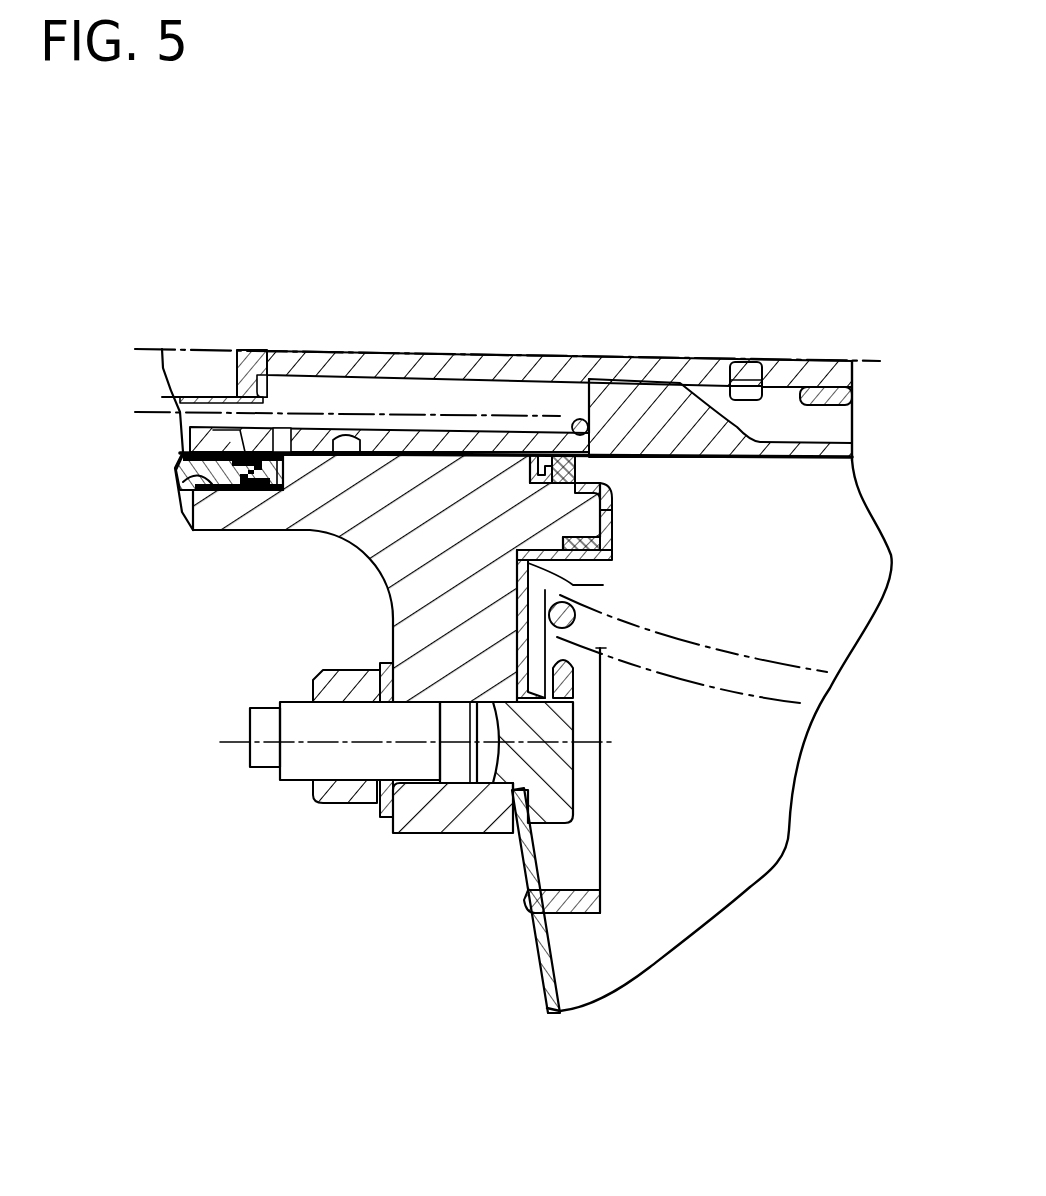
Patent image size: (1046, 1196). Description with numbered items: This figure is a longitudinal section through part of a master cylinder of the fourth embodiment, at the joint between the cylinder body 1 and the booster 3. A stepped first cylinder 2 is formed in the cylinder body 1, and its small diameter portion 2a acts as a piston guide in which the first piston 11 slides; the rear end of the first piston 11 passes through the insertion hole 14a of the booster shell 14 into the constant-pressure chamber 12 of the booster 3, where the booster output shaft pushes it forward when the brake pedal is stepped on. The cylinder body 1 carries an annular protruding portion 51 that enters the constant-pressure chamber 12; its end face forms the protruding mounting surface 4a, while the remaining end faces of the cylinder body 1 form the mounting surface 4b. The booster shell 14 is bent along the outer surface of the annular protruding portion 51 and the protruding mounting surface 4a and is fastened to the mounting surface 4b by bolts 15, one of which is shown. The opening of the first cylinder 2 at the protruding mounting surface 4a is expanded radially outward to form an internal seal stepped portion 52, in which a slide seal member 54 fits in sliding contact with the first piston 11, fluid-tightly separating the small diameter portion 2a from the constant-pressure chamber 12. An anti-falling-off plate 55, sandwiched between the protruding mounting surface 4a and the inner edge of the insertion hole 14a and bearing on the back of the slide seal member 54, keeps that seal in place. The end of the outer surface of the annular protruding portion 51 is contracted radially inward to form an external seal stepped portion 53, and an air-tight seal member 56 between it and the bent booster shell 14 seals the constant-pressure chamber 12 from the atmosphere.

The cylinder body 1 is at (378, 540).
The first cylinder 2 is at (175, 468).
The small diameter portion 2a is at (327, 455).
The booster 3 is at (528, 985).
The protruding mounting surface 4a is at (617, 525).
The mounting surface 4b is at (548, 703).
The first piston 11 is at (690, 386).
The constant-pressure chamber 12 is at (693, 902).
The booster shell 14 is at (512, 900).
The insertion hole 14a is at (610, 486).
The bolts 15 is at (330, 752).
The annular protruding portion 51 is at (523, 520).
The internal seal stepped portion 52 is at (546, 463).
The external seal stepped portion 53 is at (615, 557).
The slide seal member 54 is at (553, 453).
The anti-falling-off plate 55 is at (582, 458).
The air-tight seal member 56 is at (603, 580).